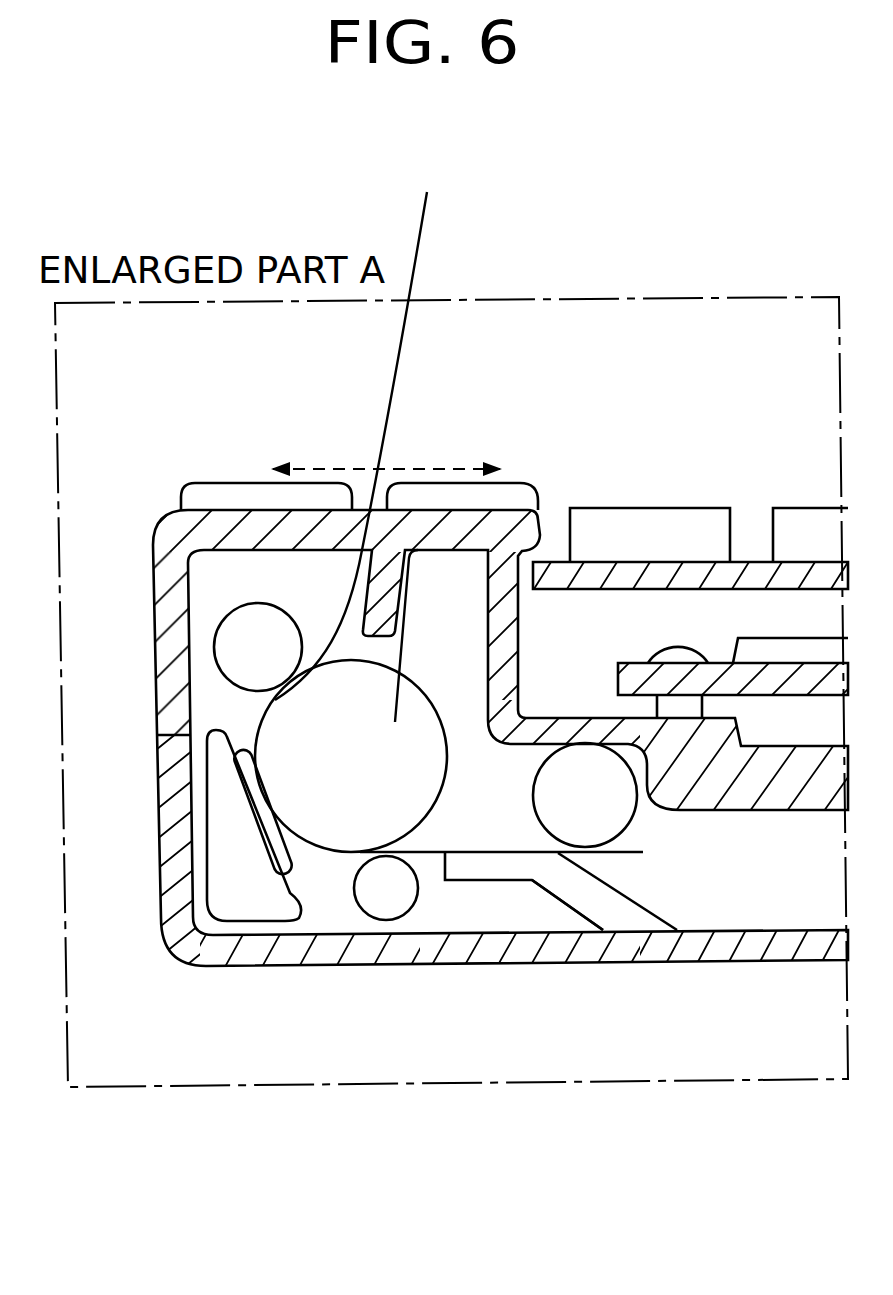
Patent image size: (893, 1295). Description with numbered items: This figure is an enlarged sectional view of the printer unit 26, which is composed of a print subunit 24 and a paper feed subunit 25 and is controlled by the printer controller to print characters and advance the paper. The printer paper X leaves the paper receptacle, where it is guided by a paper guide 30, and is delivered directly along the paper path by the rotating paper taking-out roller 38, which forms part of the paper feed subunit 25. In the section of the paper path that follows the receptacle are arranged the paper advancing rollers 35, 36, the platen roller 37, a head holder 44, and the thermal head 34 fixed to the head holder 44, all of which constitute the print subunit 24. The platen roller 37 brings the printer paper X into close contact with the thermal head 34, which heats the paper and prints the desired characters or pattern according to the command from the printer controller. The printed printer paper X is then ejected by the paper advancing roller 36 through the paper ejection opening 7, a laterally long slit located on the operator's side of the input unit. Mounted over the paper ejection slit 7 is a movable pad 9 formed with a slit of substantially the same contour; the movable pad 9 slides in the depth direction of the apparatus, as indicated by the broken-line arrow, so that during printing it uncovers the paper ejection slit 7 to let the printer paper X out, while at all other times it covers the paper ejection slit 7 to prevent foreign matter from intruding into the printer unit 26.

The paper ejection opening 7 is at (378, 535).
The movable pad 9 is at (200, 502).
The printer paper X is at (345, 613).
The print subunit 24 is at (338, 878).
The paper feed subunit 25 is at (537, 894).
The printer unit 26 is at (305, 986).
The paper guide 30 is at (600, 906).
The thermal head 34 is at (283, 858).
The paper advancing roller 35 is at (397, 900).
The paper advancing roller 36 is at (242, 650).
The platen roller 37 is at (418, 708).
The paper taking-out roller 38 is at (604, 830).
The head holder 44 is at (235, 838).